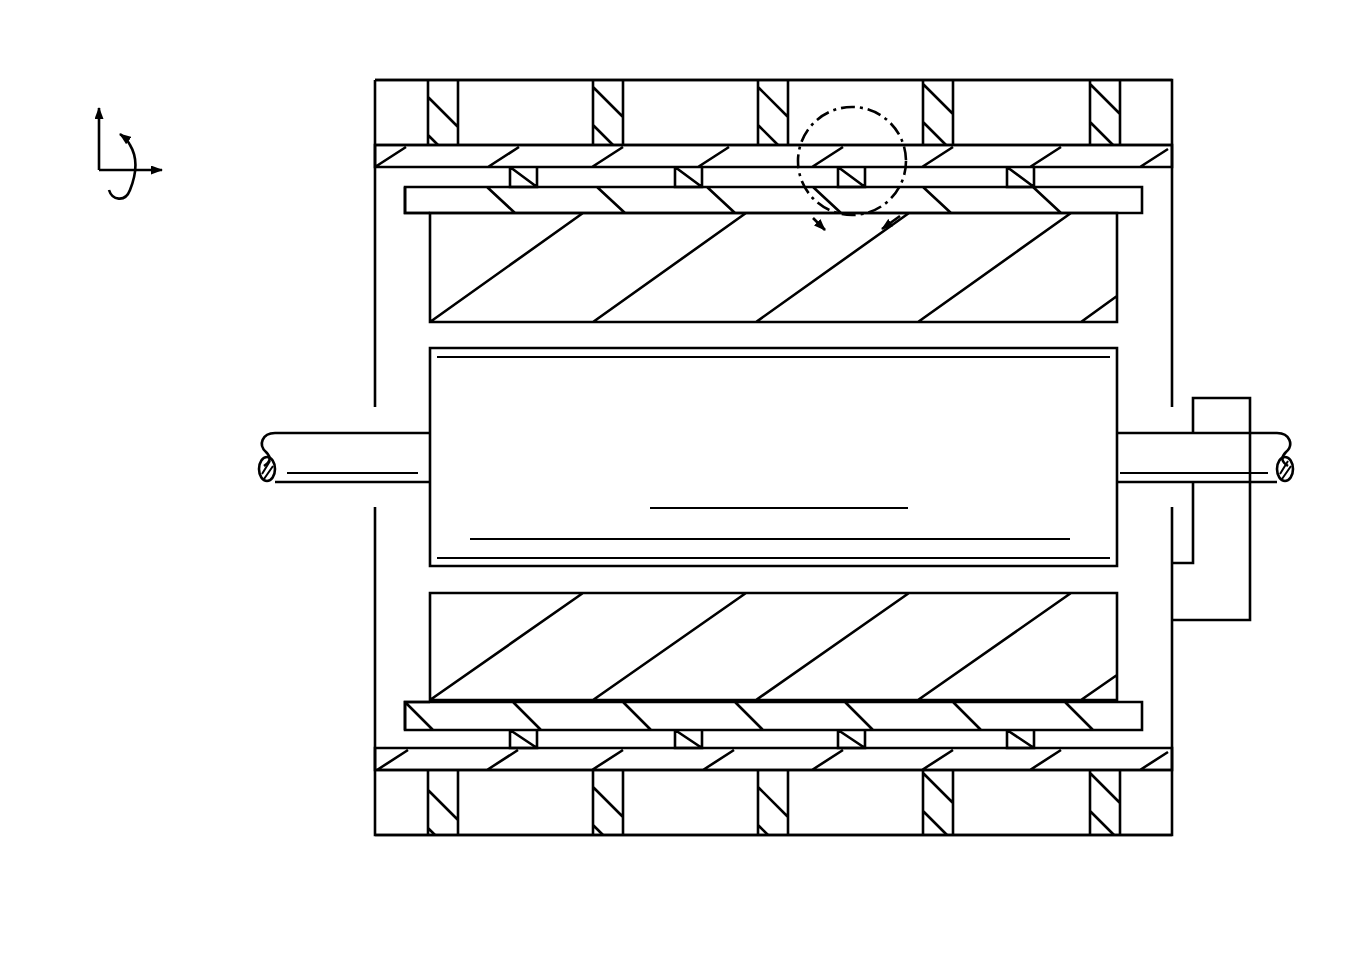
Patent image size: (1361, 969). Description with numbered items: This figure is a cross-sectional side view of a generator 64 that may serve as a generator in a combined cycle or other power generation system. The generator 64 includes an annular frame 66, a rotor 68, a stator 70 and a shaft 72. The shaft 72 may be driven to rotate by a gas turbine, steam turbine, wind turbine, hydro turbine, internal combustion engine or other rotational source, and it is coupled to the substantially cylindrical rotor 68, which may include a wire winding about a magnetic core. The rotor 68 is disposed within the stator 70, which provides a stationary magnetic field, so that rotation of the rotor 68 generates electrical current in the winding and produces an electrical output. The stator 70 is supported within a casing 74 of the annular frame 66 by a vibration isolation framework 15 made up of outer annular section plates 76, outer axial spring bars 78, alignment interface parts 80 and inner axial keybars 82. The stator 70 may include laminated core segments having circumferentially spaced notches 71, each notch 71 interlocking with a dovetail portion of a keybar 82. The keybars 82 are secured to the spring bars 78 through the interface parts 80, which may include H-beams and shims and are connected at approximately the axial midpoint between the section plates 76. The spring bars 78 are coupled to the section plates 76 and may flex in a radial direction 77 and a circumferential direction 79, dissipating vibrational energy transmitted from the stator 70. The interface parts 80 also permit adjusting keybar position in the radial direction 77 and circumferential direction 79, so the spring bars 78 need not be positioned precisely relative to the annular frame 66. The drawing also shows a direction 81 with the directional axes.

The vibration isolation system or framework 15 is at (408, 121).
The generator 64 is at (1280, 180).
The annular frame 66 is at (1211, 117).
The rotor 68 is at (430, 397).
The stator 70 is at (430, 290).
The notch 71 is at (448, 212).
The shaft 72 is at (288, 432).
The casing 74 is at (538, 80).
The section plates 76 is at (757, 117).
The radial direction 77 is at (99, 168).
The spring bars 78 is at (377, 157).
The circumferential direction 79 is at (128, 198).
The interface parts 80 is at (687, 188).
The radial direction 81 is at (146, 170).
The keybars 82 is at (407, 200).